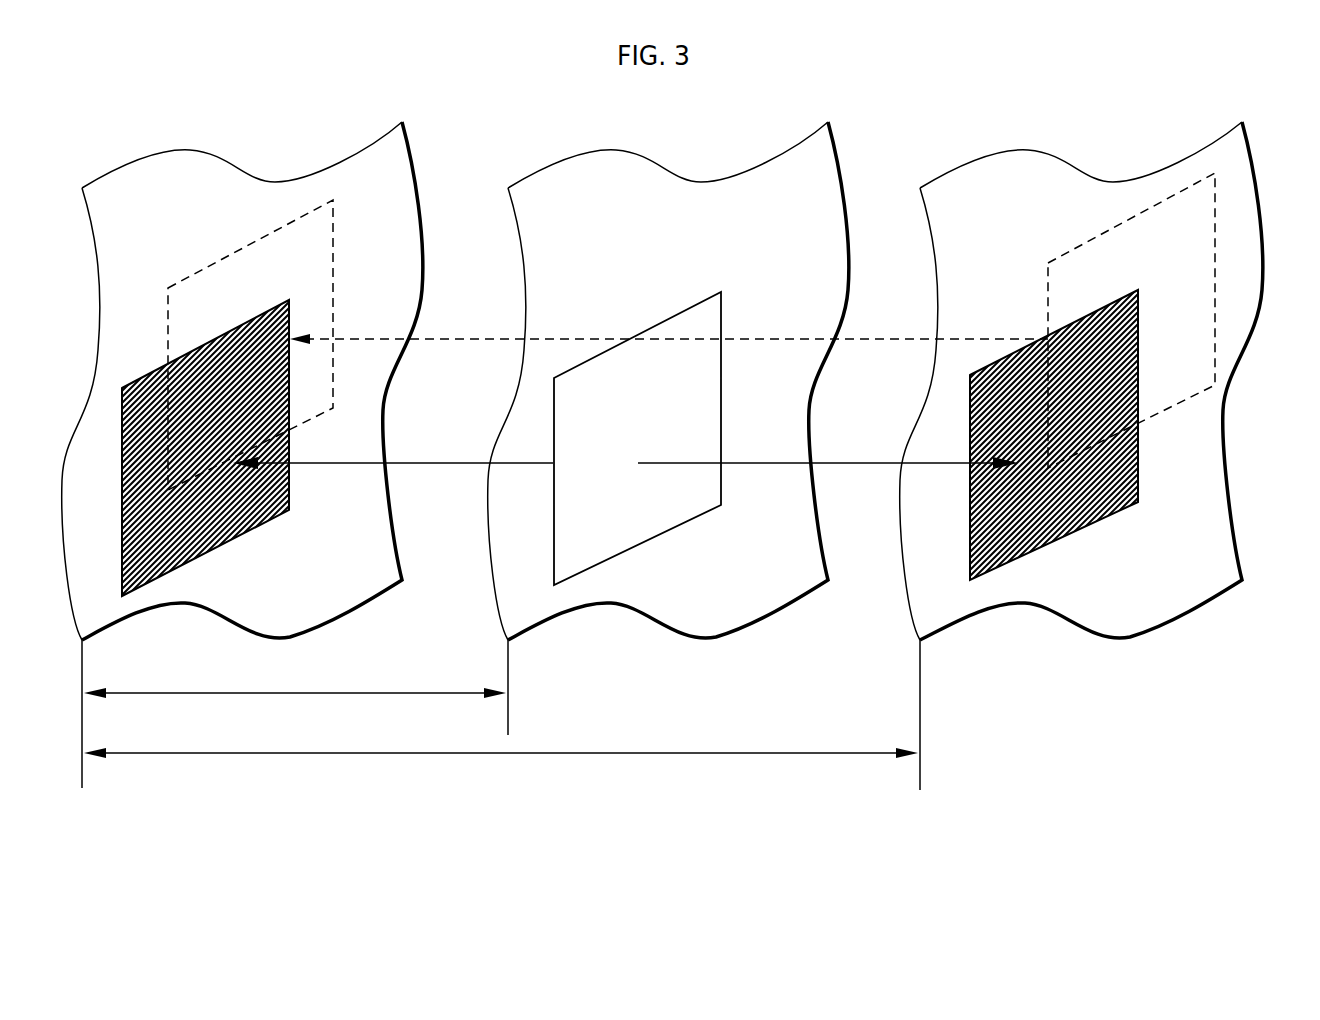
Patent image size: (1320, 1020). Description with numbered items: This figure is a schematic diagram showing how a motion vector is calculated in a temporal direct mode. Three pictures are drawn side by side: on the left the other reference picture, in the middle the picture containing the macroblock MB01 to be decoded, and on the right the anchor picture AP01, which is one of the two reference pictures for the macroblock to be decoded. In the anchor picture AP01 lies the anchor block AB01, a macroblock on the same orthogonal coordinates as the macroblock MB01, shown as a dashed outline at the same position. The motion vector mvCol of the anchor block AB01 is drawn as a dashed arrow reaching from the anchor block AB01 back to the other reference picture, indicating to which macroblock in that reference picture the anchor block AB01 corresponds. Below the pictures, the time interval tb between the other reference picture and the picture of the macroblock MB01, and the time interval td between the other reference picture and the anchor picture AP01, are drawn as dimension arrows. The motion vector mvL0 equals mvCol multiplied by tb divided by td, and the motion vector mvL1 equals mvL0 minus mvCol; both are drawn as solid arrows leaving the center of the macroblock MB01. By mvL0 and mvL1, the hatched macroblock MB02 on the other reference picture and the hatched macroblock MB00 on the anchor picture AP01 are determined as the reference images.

The macroblock on the other reference picture MB02 is at (122, 555).
The macroblock to be decoded MB01 is at (688, 328).
The macroblock on the anchor picture MB00 is at (1138, 458).
The anchor block AB01 is at (1123, 219).
The anchor picture AP01 is at (1228, 400).
The motion vector of the anchor block mvCol is at (669, 321).
The motion vector mvL0 is at (393, 478).
The motion vector mvL1 is at (828, 478).
The time interval tb is at (295, 682).
The time interval td is at (501, 741).